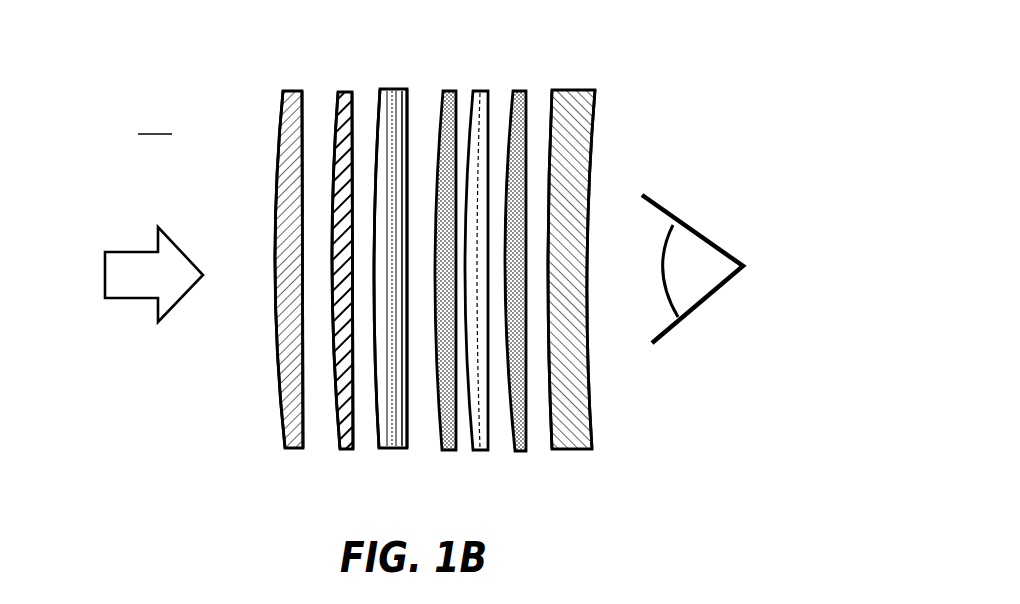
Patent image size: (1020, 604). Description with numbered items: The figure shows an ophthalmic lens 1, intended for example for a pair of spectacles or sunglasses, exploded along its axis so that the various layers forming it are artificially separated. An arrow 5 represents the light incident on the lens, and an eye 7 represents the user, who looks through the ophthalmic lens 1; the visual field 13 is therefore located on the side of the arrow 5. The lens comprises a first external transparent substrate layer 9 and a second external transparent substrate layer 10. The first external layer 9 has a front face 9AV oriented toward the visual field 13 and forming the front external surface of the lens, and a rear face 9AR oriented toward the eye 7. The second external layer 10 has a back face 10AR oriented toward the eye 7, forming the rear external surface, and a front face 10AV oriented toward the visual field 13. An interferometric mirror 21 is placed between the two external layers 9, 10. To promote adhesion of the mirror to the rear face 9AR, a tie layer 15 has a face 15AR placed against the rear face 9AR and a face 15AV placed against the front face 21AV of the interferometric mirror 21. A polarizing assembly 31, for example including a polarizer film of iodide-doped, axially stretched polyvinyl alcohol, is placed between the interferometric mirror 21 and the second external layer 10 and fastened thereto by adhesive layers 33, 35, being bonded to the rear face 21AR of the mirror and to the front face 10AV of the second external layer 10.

The ophthalmic lens 1 is at (688, 158).
The arrow 5 is at (132, 257).
The eye 7 is at (733, 277).
The first external transparent substrate layer 9 is at (280, 87).
The front face 9AV is at (275, 398).
The rear face 9AR is at (302, 448).
The second external transparent substrate layer 10 is at (568, 89).
The front face 10AV is at (553, 450).
The back face 10AR is at (590, 433).
The visual field 13 is at (155, 118).
The tie layer 15 is at (344, 106).
The rear face 15AV is at (340, 98).
The front face 15AR is at (354, 93).
The interferometric mirror 21 is at (403, 448).
The front face 21AV is at (377, 418).
The rear face 21AR is at (408, 370).
The polarizing assembly 31 is at (485, 450).
The adhesive layer 33 is at (450, 89).
The adhesive layer 35 is at (515, 90).